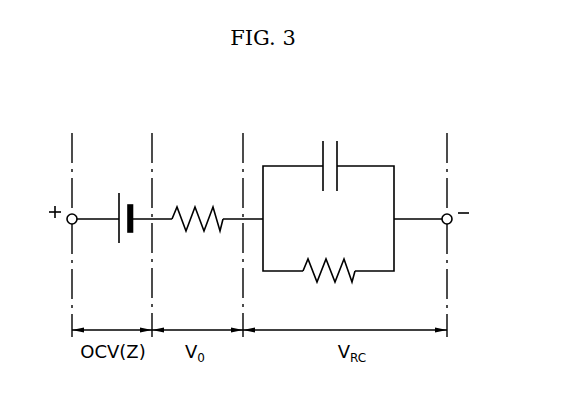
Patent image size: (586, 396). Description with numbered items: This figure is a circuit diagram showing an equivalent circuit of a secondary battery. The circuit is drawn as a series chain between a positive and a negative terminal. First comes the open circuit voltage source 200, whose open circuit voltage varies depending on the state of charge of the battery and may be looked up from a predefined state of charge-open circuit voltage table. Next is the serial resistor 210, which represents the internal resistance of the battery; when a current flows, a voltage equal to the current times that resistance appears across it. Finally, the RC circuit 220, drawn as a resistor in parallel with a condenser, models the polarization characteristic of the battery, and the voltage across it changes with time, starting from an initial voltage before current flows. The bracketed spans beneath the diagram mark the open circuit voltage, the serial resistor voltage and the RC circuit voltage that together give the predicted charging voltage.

The open circuit voltage source 200 is at (125, 146).
The serial resistor 210 is at (218, 146).
The RC circuit 220 is at (397, 144).